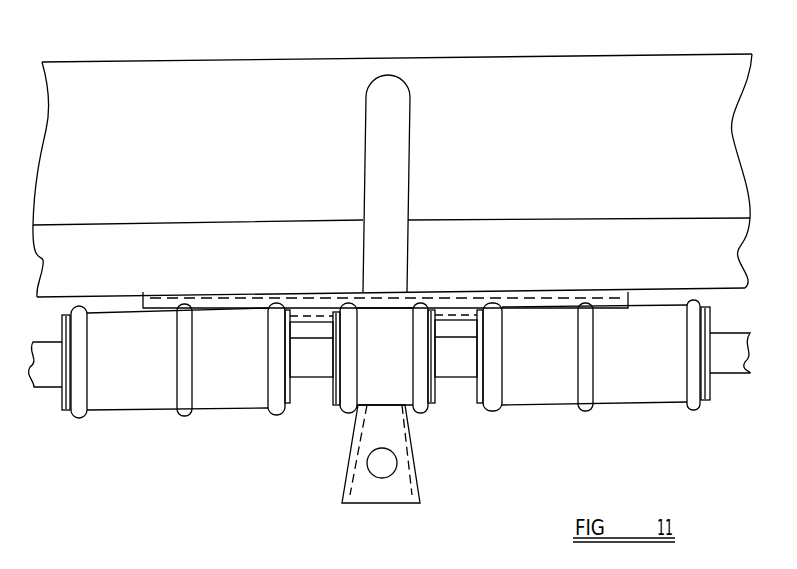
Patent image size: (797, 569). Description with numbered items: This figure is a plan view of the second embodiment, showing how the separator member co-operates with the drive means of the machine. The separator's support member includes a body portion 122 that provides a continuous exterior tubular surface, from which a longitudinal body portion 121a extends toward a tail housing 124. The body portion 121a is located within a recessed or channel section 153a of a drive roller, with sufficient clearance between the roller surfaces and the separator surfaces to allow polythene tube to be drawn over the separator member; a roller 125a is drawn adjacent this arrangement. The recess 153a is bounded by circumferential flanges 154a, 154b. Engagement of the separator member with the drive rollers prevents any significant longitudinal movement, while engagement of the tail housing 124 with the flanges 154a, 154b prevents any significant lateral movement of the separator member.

The longitudinal body portion 121a is at (376, 147).
The body portion 122 is at (302, 307).
The recessed or channel section 153a is at (410, 328).
The roller 125a is at (140, 390).
The circumferential flange 154b is at (343, 411).
The circumferential flange 154a is at (422, 411).
The tail housing 124 is at (358, 455).